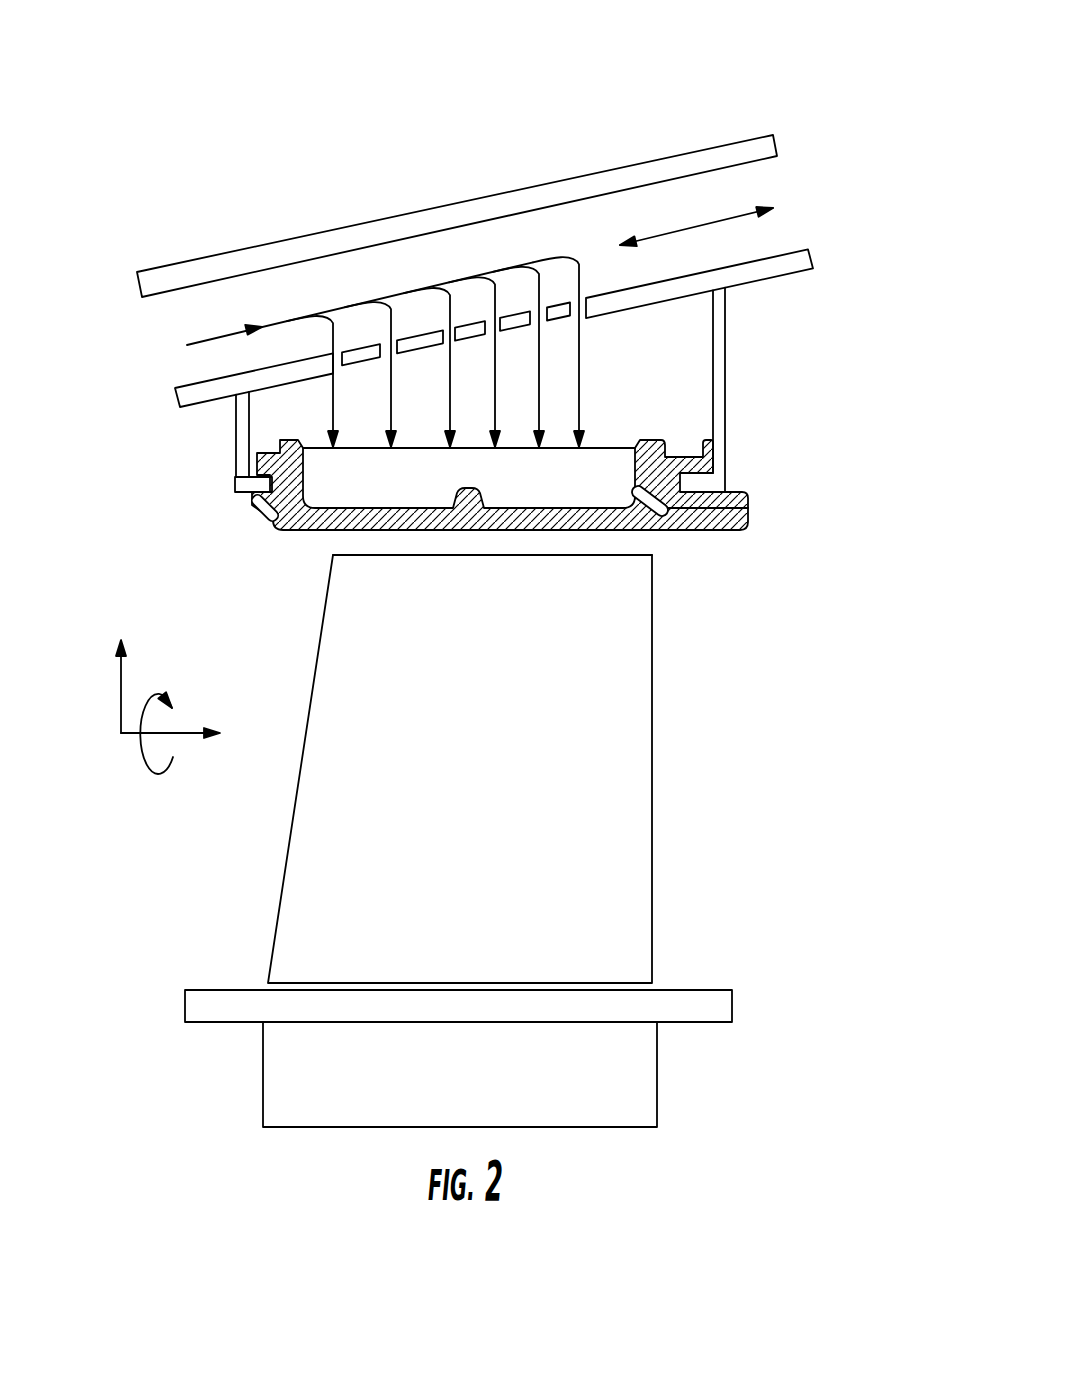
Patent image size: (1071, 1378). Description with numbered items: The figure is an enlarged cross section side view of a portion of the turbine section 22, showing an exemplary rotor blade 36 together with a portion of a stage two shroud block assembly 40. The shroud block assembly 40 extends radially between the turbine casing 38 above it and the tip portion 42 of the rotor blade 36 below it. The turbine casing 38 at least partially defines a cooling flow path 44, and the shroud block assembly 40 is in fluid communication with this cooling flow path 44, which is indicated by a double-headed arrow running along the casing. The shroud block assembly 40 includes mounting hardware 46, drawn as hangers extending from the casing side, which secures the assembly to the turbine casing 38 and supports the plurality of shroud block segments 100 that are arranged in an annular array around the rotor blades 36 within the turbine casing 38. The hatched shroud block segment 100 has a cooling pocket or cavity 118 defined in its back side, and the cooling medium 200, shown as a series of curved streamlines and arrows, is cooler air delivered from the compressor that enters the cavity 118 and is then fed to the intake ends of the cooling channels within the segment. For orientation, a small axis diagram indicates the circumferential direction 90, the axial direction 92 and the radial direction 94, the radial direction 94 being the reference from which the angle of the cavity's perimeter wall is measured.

The turbine section 22 is at (651, 63).
The rotor blade 36 is at (488, 786).
The turbine casing 38 is at (375, 220).
The shroud block assembly 40 is at (762, 421).
The tip portion 42 is at (652, 555).
The cooling flow path 44 is at (673, 228).
The mounting hardware 46 is at (211, 400).
The circumferential direction 90 is at (140, 753).
The axial direction 92 is at (185, 730).
The radial direction 94 is at (120, 685).
The shroud block segment 100 is at (285, 546).
The cavity 118 is at (605, 447).
The cooling medium 200 is at (320, 313).